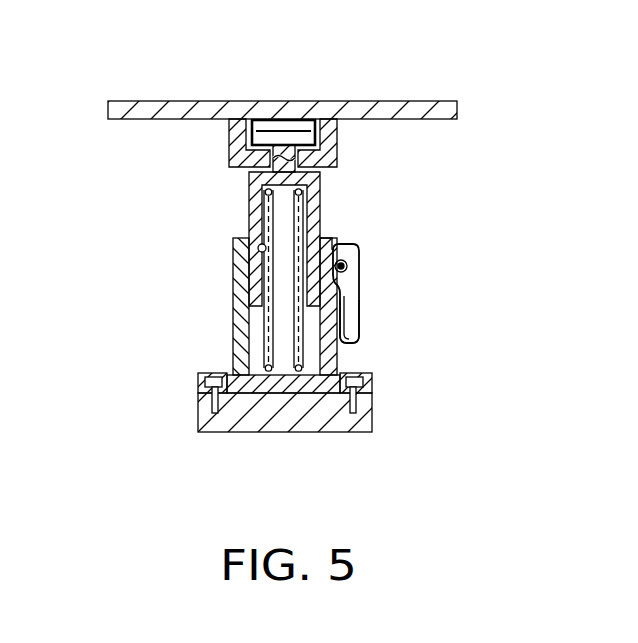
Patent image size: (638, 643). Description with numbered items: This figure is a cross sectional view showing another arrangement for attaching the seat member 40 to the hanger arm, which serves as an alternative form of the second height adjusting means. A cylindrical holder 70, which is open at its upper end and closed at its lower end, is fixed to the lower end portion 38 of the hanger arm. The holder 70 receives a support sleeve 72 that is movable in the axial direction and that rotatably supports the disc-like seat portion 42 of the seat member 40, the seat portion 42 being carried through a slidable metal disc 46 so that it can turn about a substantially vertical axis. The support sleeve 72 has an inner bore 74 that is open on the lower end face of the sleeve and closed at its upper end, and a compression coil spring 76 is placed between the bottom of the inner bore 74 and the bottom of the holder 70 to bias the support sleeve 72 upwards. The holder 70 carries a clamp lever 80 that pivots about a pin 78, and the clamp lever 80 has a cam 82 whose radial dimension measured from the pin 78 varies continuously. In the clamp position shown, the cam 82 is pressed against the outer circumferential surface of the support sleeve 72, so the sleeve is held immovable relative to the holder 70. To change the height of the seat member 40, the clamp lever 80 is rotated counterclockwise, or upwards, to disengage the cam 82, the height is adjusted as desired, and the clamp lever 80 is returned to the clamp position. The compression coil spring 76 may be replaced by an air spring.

The lower end portion 38 is at (287, 418).
The seat member 40 is at (130, 64).
The seat portion 42 is at (377, 108).
The slidable metal disc 46 is at (282, 126).
The cylindrical holder 70 is at (243, 308).
The support sleeve 72 is at (250, 208).
The inner bore 74 is at (258, 250).
The compression coil spring 76 is at (320, 195).
The pin 78 is at (350, 263).
The clamp lever 80 is at (353, 310).
The cam 82 is at (346, 272).